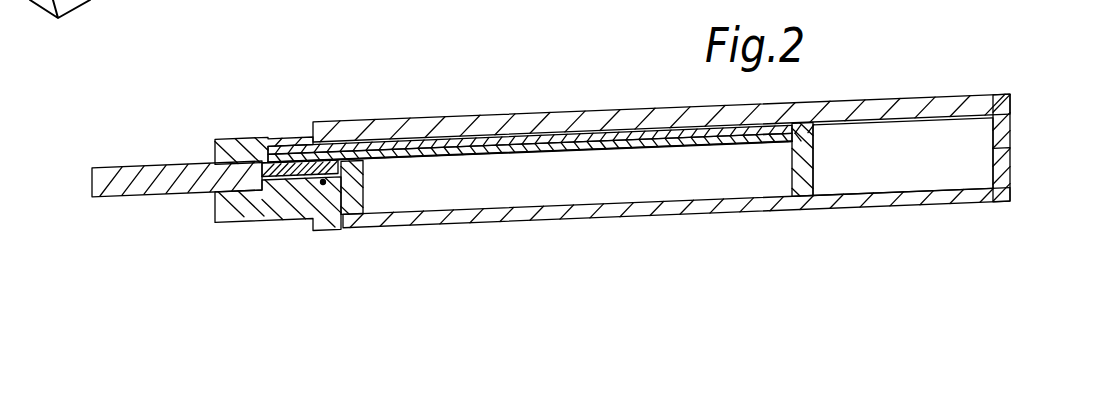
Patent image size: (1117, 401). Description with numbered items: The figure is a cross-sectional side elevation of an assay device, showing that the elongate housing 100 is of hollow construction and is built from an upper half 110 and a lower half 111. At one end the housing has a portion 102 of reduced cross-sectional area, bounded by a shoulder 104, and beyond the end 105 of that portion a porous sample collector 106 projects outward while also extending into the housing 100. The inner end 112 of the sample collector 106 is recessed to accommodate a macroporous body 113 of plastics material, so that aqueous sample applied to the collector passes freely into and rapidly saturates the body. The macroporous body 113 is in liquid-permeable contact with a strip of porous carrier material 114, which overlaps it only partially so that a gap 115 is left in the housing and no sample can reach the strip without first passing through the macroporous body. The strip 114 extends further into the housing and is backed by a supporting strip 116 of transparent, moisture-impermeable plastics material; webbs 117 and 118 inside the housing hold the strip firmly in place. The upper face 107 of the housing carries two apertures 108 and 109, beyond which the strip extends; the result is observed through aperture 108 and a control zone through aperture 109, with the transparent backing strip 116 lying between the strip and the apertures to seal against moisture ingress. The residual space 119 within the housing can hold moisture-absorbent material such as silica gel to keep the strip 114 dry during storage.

The housing 100 is at (745, 212).
The portion of reduced cross-sectional area 102 is at (265, 139).
The shoulder 104 is at (308, 224).
The end of portion 105 is at (215, 203).
The porous sample collector 106 is at (161, 167).
The upper face 107 is at (345, 120).
The aperture 108 is at (490, 123).
The aperture 109 is at (553, 120).
The upper half 110 is at (1013, 117).
The lower half 111 is at (1012, 170).
The inner end of sample collector 112 is at (323, 182).
The macroporous body 113 is at (297, 161).
The strip of porous carrier material 114 is at (604, 149).
The gap 115 is at (248, 153).
The supporting strip 116 is at (466, 133).
The webb 117 is at (351, 182).
The webb 118 is at (800, 167).
The residual space 119 is at (900, 165).